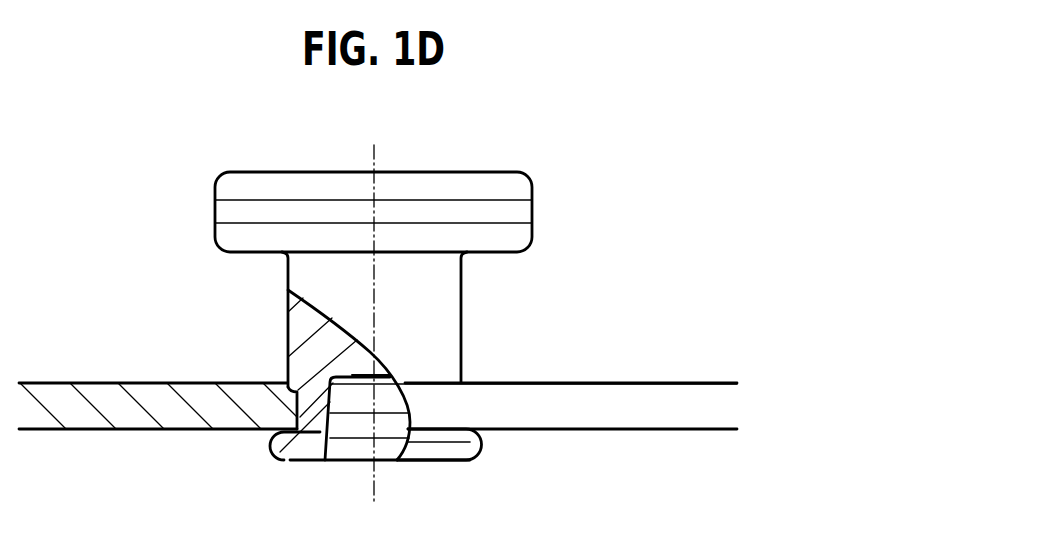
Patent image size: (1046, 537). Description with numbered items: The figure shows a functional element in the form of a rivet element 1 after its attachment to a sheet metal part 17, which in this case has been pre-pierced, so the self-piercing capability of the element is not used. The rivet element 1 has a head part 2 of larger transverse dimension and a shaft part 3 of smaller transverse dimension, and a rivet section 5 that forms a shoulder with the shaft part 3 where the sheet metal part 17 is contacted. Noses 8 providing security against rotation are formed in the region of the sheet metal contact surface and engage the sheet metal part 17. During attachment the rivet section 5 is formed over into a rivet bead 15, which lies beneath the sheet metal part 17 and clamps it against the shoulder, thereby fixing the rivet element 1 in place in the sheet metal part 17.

The rivet element 1 is at (411, 279).
The head part 2 is at (520, 212).
The shaft part 3 is at (443, 308).
The rivet section 5 is at (313, 415).
The noses 8 is at (287, 392).
The rivet bead 15 is at (450, 452).
The sheet metal part 17 is at (638, 420).